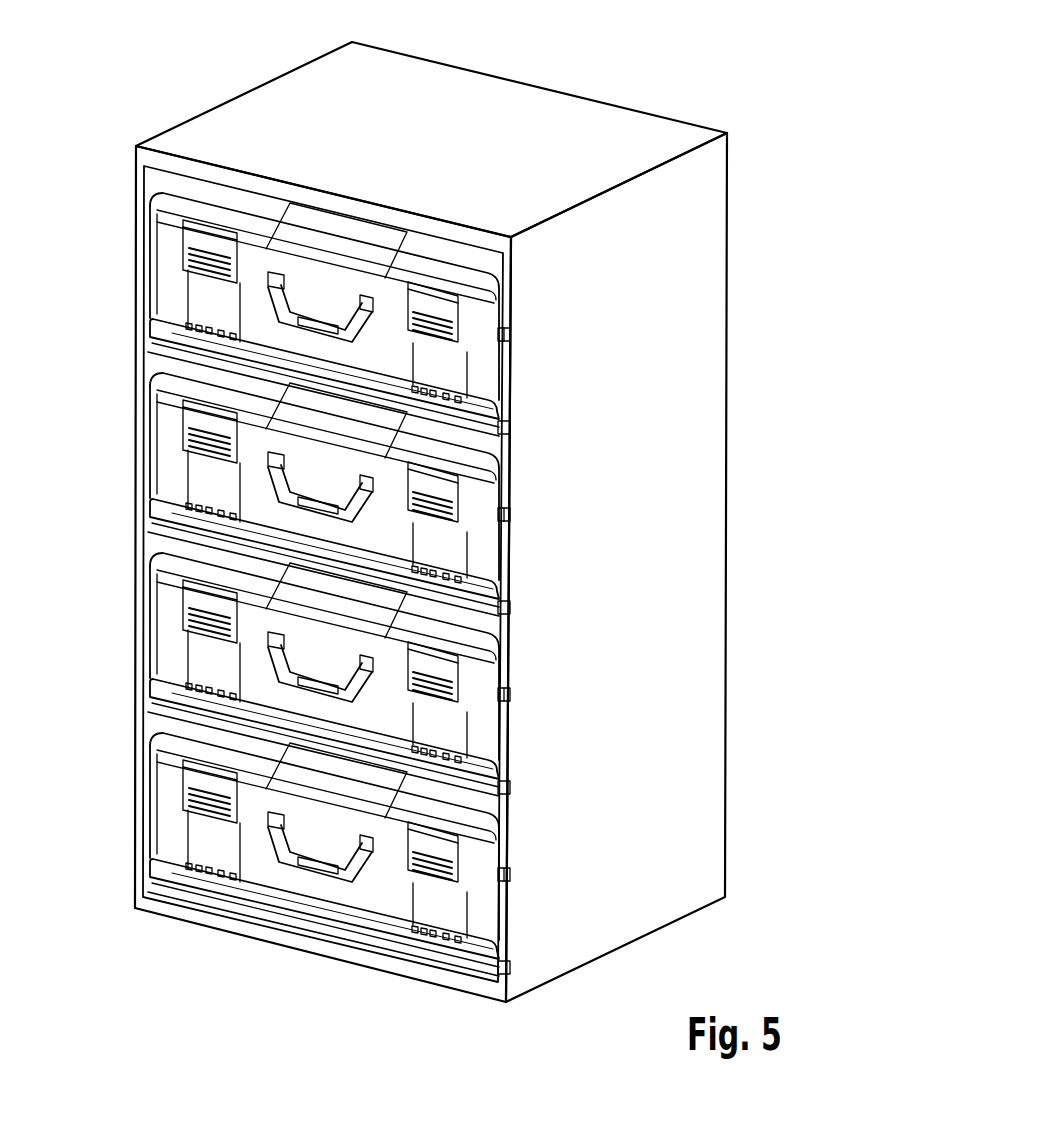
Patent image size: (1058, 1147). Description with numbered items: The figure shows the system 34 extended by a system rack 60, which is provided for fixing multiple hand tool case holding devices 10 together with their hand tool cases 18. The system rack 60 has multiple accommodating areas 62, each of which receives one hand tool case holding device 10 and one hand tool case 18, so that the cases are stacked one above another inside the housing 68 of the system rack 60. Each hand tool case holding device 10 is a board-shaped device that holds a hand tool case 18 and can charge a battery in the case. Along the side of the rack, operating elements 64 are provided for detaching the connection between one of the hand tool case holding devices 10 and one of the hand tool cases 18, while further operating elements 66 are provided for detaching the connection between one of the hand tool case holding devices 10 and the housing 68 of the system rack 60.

The hand tool case holding device 10 is at (165, 343).
The hand tool case 18 is at (165, 280).
The system 34 is at (710, 89).
The system rack 60 is at (660, 74).
The accommodating area 62 is at (125, 222).
The operating element 64 is at (511, 334).
The operating element 66 is at (511, 425).
The housing 68 is at (697, 217).